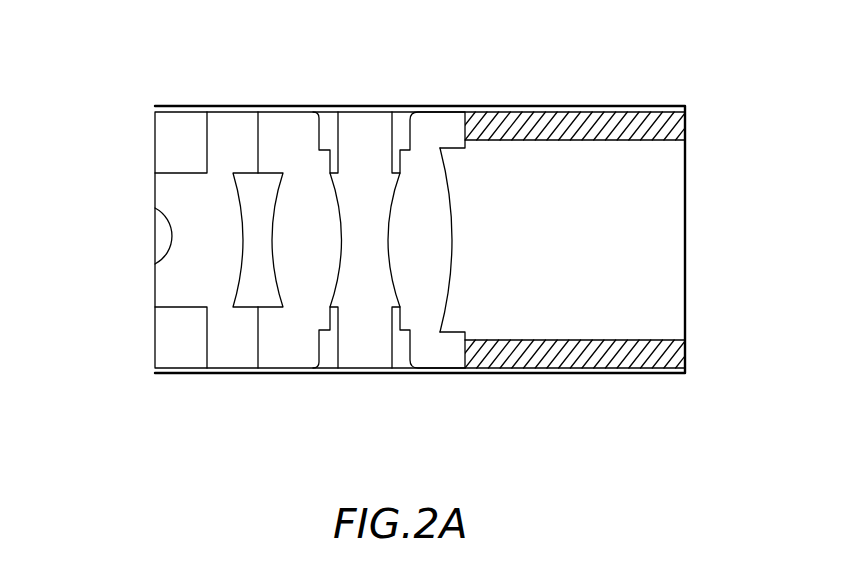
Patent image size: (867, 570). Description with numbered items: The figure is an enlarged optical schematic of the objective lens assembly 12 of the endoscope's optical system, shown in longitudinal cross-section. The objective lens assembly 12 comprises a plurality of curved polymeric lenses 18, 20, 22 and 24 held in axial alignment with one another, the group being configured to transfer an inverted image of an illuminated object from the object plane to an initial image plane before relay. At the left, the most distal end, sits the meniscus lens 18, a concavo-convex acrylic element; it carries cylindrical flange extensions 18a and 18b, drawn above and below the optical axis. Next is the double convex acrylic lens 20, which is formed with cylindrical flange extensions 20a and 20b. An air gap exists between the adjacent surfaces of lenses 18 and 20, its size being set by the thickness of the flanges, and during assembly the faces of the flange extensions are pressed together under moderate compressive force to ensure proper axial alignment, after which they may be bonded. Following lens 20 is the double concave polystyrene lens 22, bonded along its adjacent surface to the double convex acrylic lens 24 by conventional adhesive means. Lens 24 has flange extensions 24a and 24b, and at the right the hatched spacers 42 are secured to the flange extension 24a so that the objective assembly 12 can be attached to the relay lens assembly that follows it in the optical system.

The objective lens assembly 12 is at (118, 204).
The meniscus lens 18 is at (190, 279).
The cylindrical flange extension 18a is at (228, 138).
The cylindrical flange extension 18b is at (235, 350).
The double convex lens 20 is at (292, 217).
The cylindrical flange extension 20a is at (275, 138).
The cylindrical flange extension 20b is at (275, 347).
The double concave lens 22 is at (362, 247).
The double convex lens 24 is at (425, 237).
The flange extension 24a is at (422, 130).
The flange extension 24b is at (447, 353).
The spacers 42 is at (647, 127).